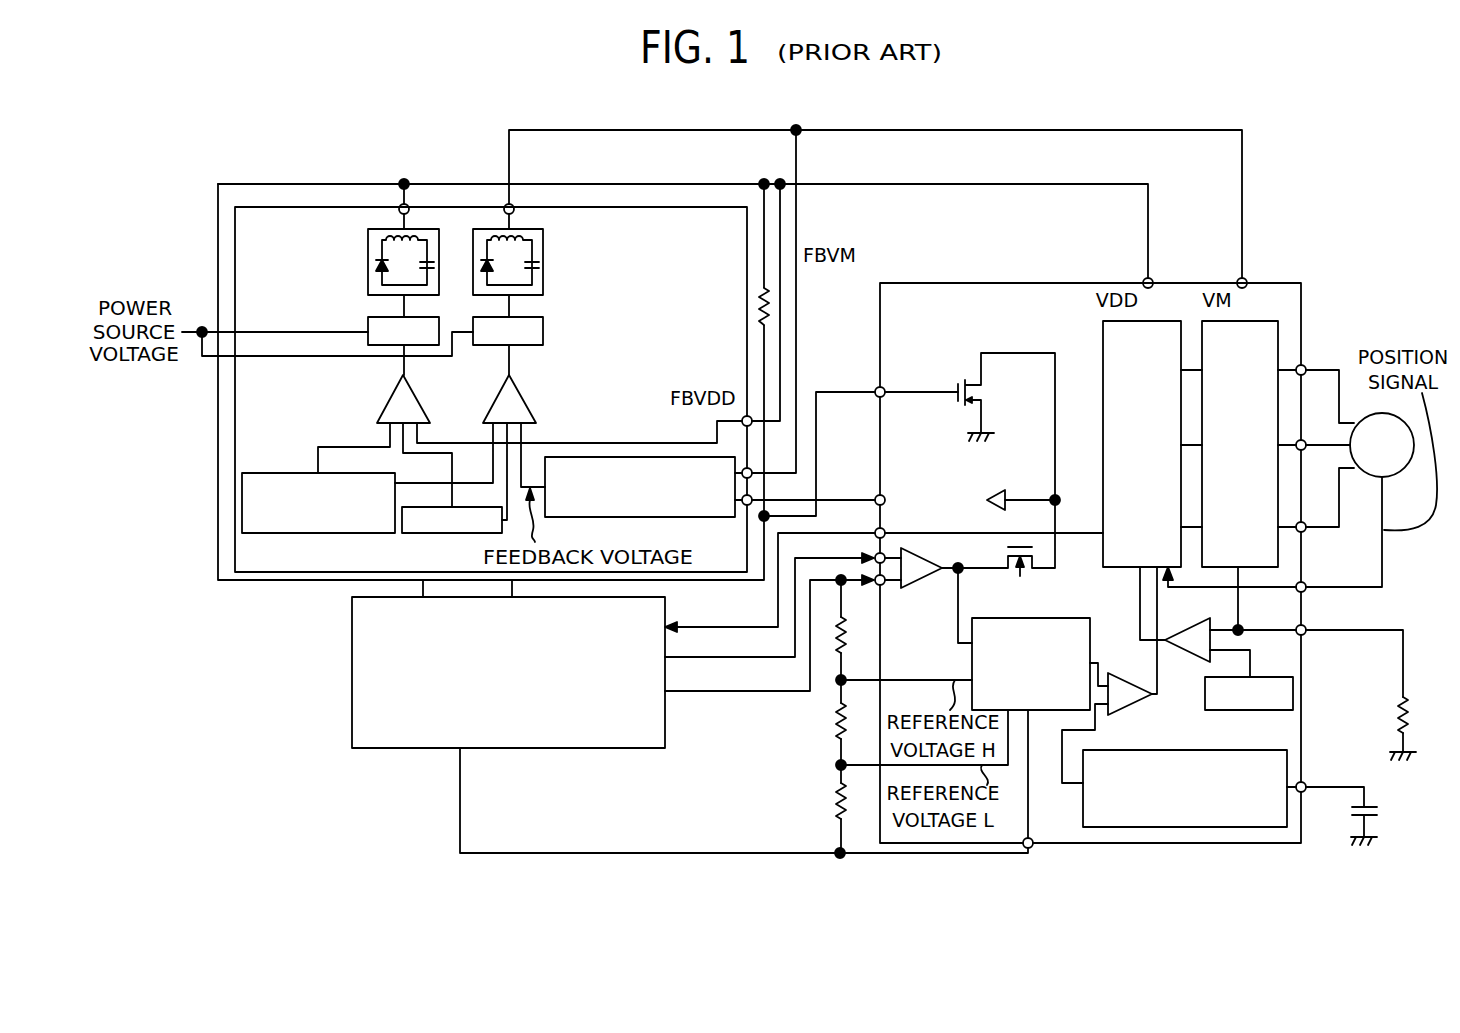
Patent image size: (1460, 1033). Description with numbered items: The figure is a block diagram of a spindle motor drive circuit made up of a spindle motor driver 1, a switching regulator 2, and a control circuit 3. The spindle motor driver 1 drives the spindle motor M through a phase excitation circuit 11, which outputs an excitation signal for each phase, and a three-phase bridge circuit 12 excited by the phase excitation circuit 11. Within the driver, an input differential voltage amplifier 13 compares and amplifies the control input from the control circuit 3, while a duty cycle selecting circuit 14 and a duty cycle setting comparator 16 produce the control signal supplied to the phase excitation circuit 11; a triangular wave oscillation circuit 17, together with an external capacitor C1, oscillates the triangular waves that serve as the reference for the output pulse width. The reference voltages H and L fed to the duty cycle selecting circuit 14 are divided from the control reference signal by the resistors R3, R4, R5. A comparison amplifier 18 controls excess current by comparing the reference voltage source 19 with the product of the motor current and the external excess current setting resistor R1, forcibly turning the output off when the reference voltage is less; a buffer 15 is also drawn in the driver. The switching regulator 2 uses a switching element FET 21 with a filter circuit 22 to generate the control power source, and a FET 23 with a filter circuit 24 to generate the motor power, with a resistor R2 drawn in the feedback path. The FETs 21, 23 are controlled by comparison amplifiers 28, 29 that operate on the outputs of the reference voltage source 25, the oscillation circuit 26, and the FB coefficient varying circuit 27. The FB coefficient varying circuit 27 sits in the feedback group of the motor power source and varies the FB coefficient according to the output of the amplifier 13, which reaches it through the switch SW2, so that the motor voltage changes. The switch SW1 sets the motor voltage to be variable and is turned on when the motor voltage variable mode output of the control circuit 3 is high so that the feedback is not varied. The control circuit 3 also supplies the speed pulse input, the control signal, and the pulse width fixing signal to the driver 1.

The spindle motor driver 1 is at (1284, 283).
The switching regulator 2 is at (233, 387).
The control circuit 3 is at (538, 748).
The phase excitation circuit 11 is at (1103, 346).
The three-phase bridge circuit 12 is at (1258, 321).
The input differential voltage amplifier 13 is at (925, 588).
The duty cycle selecting circuit 14 is at (1090, 641).
The buffer amplifier 15 is at (992, 494).
The duty cycle setting comparator 16 is at (1130, 705).
The triangular wave oscillation circuit 17 is at (1083, 797).
The comparison amplifier 18 is at (1206, 623).
The reference voltage source VREF3 19 is at (1259, 677).
The switching element (FET) 21 is at (368, 326).
The filter circuit 22 is at (368, 260).
The switching element (FET) 23 is at (543, 330).
The filter circuit 24 is at (543, 258).
The reference voltage source VREF1 25 is at (432, 533).
The oscillation circuit 26 is at (288, 473).
The FB coefficient varying circuit 27 is at (590, 457).
The comparison amplifier 28 is at (388, 405).
The comparison amplifier 29 is at (496, 400).
The external excess current setting resistor R1 is at (1398, 706).
The resistor R2 is at (770, 310).
The resistor R3 is at (836, 640).
The resistor R4 is at (836, 722).
The resistor R5 is at (836, 806).
The capacitor C1 is at (1378, 815).
The motor voltage varying setting switch SW1 is at (993, 396).
The motor voltage varying setting switch SW2 is at (1022, 577).
The spindle motor M is at (1368, 480).